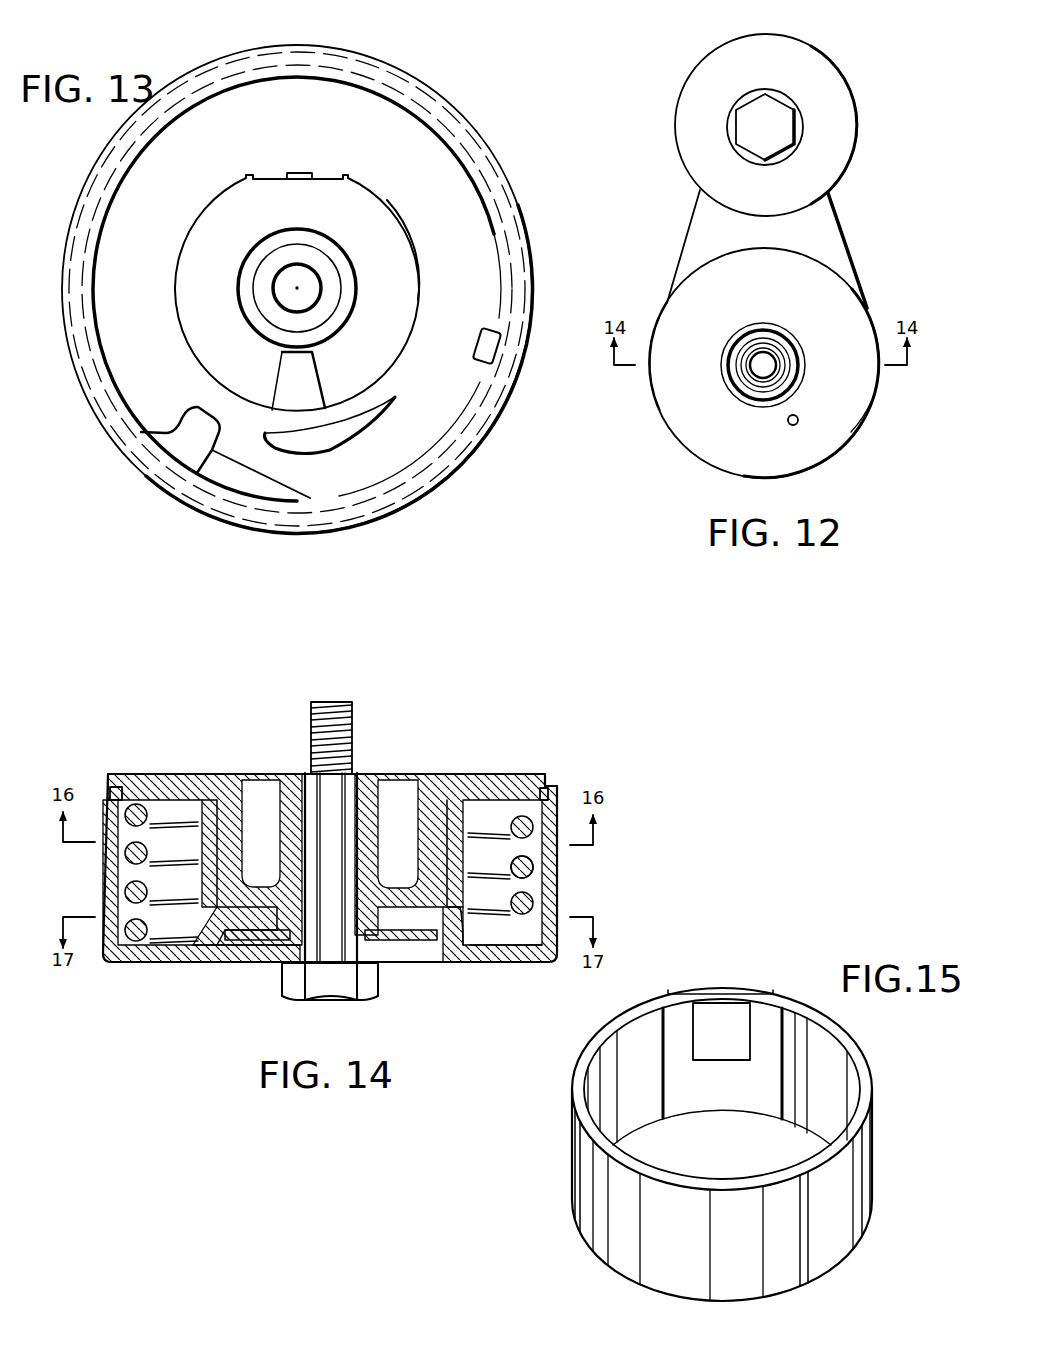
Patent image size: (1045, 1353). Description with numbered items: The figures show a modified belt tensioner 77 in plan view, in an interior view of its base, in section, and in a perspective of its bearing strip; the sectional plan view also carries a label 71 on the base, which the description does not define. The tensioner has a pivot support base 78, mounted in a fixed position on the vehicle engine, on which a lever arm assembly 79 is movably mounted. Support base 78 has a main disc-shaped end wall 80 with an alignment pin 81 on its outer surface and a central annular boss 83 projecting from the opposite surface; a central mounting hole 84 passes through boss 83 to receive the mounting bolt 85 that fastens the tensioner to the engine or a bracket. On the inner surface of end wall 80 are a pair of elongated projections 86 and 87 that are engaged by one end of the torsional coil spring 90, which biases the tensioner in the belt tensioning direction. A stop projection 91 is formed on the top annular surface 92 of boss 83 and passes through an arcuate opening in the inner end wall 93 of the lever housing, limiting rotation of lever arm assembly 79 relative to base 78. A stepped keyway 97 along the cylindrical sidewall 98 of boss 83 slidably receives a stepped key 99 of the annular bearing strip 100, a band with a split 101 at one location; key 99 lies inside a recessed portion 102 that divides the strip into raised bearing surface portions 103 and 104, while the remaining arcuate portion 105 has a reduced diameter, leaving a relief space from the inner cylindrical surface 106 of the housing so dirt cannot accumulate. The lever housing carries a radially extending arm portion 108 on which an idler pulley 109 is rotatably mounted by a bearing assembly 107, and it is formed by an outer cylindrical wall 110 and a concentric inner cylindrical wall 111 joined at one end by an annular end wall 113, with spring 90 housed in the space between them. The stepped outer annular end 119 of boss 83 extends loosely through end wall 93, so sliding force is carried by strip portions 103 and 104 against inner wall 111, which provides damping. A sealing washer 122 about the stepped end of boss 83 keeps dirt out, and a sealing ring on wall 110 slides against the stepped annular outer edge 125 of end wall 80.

In FIG. 12, the brake assembly 71 is at (658, 412).
In FIG. 14, the belt tensioner 77 is at (443, 772).
In FIG. 13, the pivot support base 78 is at (423, 77).
In FIG. 14, the pivot support base 78 is at (165, 772).
In FIG. 12, the lever arm assembly 79 is at (867, 302).
In FIG. 14, the lever arm assembly 79 is at (178, 963).
In FIG. 13, the end wall 80 is at (467, 293).
In FIG. 12, the end wall 80 is at (853, 403).
In FIG. 14, the end wall 80 is at (182, 787).
In FIG. 12, the alignment pin 81 is at (800, 422).
In FIG. 13, the annular boss 83 is at (212, 198).
In FIG. 14, the annular boss 83 is at (232, 847).
In FIG. 13, the central mounting hole 84 is at (313, 292).
In FIG. 14, the central mounting hole 84 is at (343, 812).
In FIG. 12, the mounting bolt 85 is at (763, 368).
In FIG. 14, the mounting bolt 85 is at (330, 953).
In FIG. 13, the elongated projection 86 is at (222, 470).
In FIG. 13, the elongated projection 87 is at (365, 423).
In FIG. 14, the torsional coil spring 90 is at (127, 963).
In FIG. 13, the stop projection 91 is at (313, 377).
In FIG. 14, the top annular surface 92 is at (452, 953).
In FIG. 14, the inner end wall 93 is at (242, 923).
In FIG. 13, the stepped keyway 97 is at (265, 172).
In FIG. 13, the cylindrical sidewall 98 is at (388, 205).
In FIG. 14, the cylindrical sidewall 98 is at (453, 797).
In FIG. 15, the stepped key 99 is at (768, 1062).
In FIG. 15, the annular bearing strip 100 is at (870, 1057).
In FIG. 15, the split 101 is at (807, 1232).
In FIG. 15, the recessed portion 102 is at (703, 993).
In FIG. 15, the bearing surface portion 103 is at (603, 1022).
In FIG. 15, the bearing surface portion 104 is at (872, 1093).
In FIG. 15, the arcuate portion 105 is at (685, 1270).
In FIG. 14, the inner cylindrical surface 106 is at (460, 883).
In FIG. 12, the bearing assembly 107 is at (773, 124).
In FIG. 12, the arm portion 108 is at (823, 238).
In FIG. 12, the idler pulley 109 is at (828, 145).
In FIG. 14, the outer cylindrical wall 110 is at (553, 813).
In FIG. 14, the inner cylindrical wall 111 is at (460, 845).
In FIG. 14, the annular end wall 113 is at (513, 957).
In FIG. 13, the stepped outer annular end 119 is at (250, 298).
In FIG. 14, the stepped outer annular end 119 is at (272, 928).
In FIG. 14, the sealing washer 122 is at (427, 940).
In FIG. 14, the stepped annular outer edge 125 is at (113, 787).